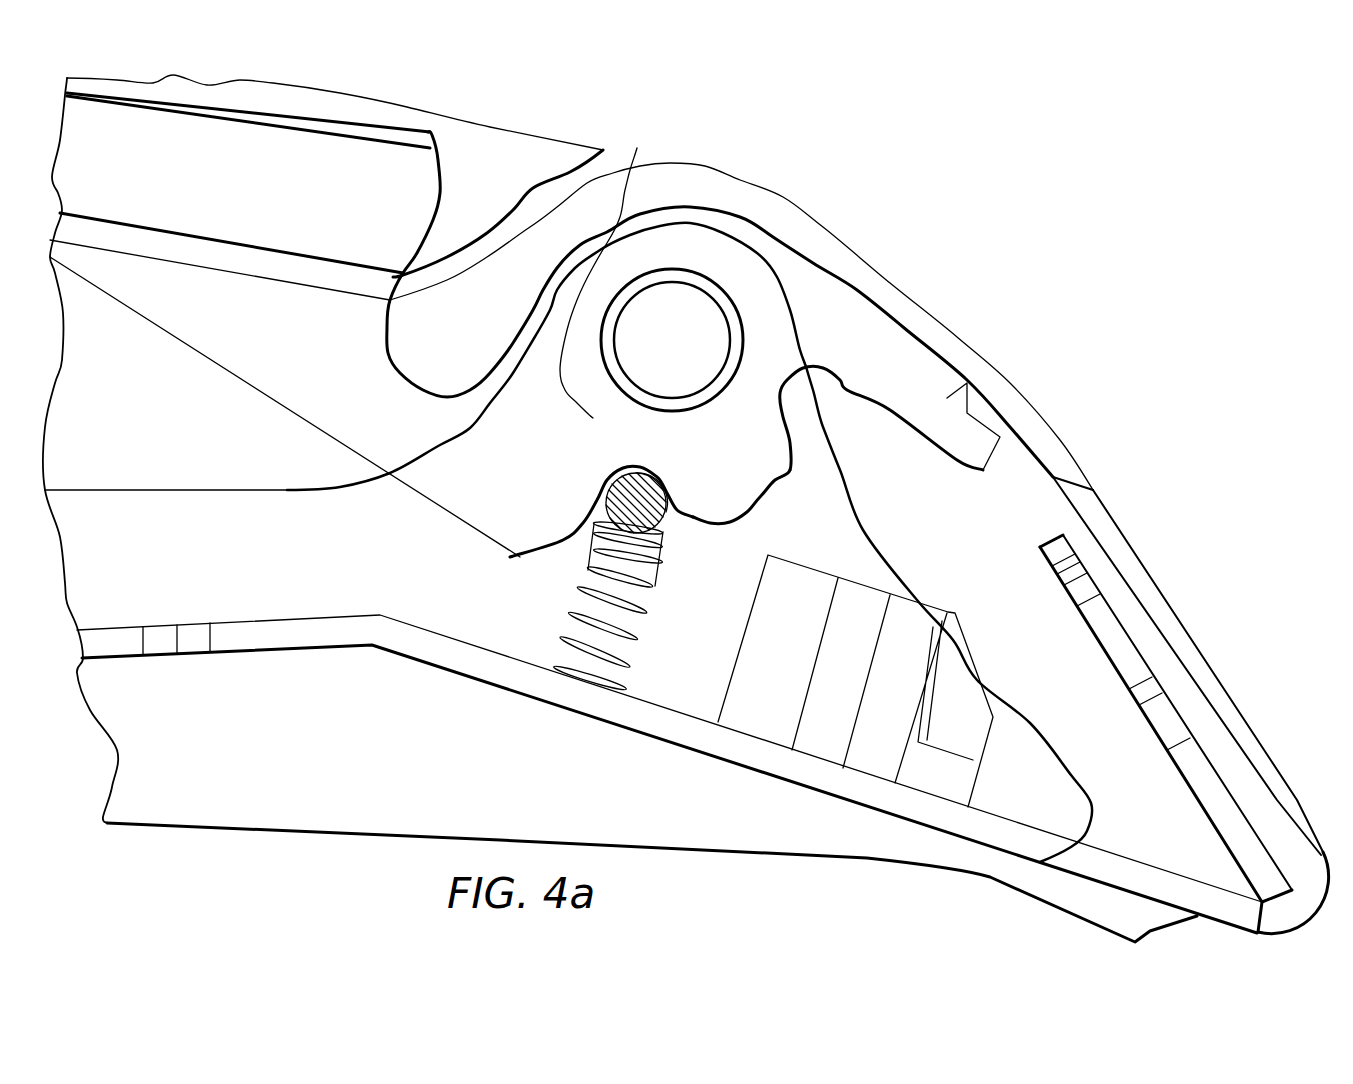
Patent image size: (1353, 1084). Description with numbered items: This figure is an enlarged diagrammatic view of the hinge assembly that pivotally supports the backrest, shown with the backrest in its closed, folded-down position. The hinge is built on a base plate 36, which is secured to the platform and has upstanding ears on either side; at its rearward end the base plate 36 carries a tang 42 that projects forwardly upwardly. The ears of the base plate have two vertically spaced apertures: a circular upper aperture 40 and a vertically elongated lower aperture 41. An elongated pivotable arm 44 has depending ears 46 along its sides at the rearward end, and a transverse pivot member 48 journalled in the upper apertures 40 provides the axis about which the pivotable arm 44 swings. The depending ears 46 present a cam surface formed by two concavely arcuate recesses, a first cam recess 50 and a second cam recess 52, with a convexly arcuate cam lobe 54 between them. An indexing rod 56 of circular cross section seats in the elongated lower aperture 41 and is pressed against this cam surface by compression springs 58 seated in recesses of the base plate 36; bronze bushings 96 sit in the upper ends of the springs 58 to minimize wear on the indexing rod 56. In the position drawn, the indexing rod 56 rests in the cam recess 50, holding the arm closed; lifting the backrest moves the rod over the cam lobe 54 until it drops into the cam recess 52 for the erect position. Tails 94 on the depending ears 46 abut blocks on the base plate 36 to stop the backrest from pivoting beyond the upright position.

The base plate 36 is at (287, 640).
The upper aperture 40 is at (741, 307).
The lower aperture 41 is at (667, 512).
The tang 42 is at (1127, 658).
The pivotable arm 44 is at (485, 133).
The depending ears 46 is at (568, 491).
The pivot member 48 is at (740, 311).
The cam recess 50 is at (590, 508).
The cam recess 52 is at (822, 385).
The cam lobe 54 is at (772, 495).
The indexing rod 56 is at (653, 470).
The compression springs 58 is at (648, 620).
The tails 94 is at (967, 383).
The bronze bushings 96 is at (667, 547).